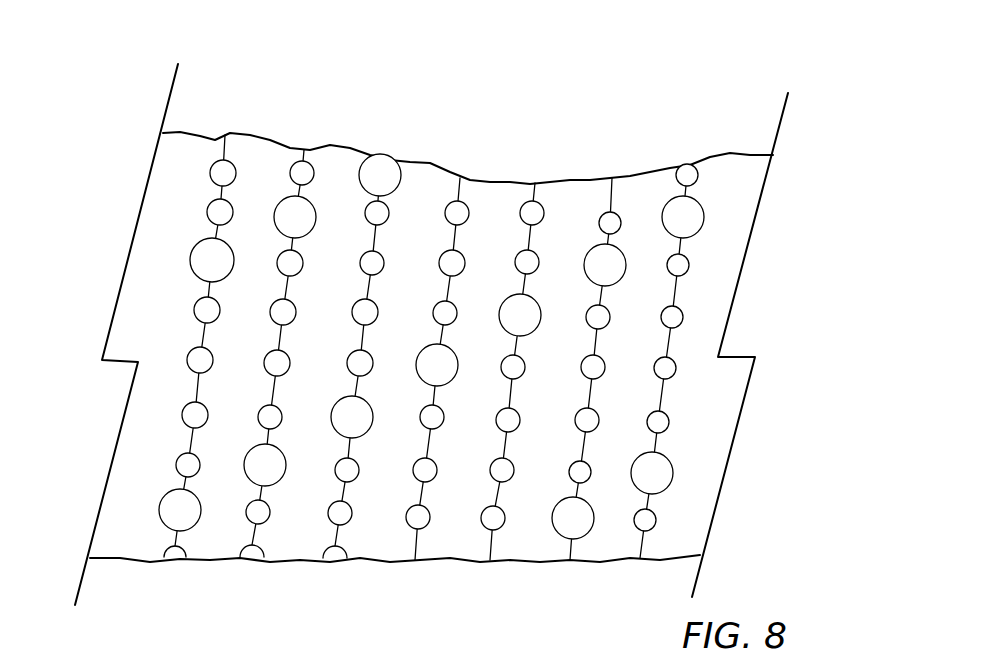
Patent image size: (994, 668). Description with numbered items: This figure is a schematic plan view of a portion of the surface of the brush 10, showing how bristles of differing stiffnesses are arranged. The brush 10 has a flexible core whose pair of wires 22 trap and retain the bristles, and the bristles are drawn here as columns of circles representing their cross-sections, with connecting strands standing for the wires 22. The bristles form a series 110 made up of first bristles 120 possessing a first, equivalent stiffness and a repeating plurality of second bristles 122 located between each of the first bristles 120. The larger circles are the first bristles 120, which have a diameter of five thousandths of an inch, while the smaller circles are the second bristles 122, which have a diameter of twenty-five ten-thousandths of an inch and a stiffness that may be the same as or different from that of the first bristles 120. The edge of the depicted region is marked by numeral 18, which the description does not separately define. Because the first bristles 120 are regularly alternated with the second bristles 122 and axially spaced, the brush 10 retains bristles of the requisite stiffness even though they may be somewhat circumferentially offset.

The brush 10 is at (768, 301).
The substrate edge 18 is at (118, 254).
The pair of wires 22 is at (195, 393).
The series of bristles 110 is at (162, 580).
The first bristles 120 is at (430, 161).
The second bristles 122 is at (236, 164).